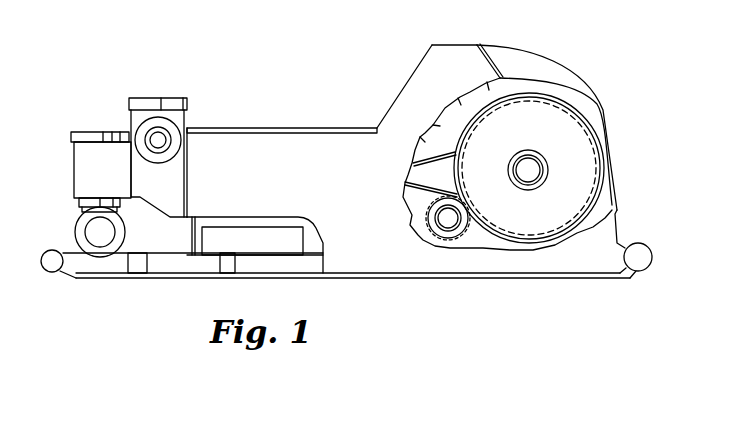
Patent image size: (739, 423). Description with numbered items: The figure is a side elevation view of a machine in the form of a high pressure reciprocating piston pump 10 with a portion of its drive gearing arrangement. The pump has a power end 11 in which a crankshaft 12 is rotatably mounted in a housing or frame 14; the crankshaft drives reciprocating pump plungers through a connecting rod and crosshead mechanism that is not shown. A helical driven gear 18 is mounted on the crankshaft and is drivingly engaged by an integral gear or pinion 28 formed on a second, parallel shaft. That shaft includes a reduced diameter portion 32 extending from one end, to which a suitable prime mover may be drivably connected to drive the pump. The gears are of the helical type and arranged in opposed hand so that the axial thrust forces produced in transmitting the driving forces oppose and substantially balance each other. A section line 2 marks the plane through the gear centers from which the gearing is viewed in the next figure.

The high pressure reciprocating piston pump 10 is at (340, 113).
The power end 11 is at (405, 80).
The housing or frame 14 is at (462, 53).
The driven gear 18 is at (543, 94).
The crankshaft 12 is at (525, 162).
The integral gear or pinion 28 is at (462, 240).
The reduced diameter portion 32 is at (407, 207).
The section line 2- 2 is at (642, 98).